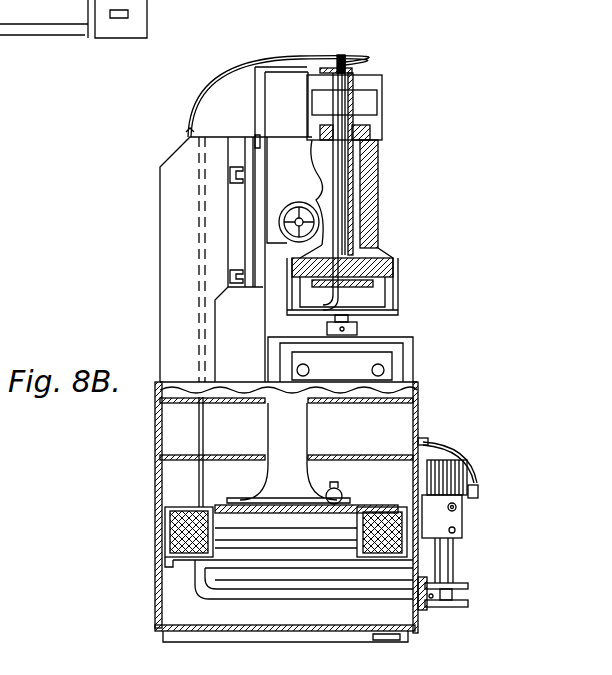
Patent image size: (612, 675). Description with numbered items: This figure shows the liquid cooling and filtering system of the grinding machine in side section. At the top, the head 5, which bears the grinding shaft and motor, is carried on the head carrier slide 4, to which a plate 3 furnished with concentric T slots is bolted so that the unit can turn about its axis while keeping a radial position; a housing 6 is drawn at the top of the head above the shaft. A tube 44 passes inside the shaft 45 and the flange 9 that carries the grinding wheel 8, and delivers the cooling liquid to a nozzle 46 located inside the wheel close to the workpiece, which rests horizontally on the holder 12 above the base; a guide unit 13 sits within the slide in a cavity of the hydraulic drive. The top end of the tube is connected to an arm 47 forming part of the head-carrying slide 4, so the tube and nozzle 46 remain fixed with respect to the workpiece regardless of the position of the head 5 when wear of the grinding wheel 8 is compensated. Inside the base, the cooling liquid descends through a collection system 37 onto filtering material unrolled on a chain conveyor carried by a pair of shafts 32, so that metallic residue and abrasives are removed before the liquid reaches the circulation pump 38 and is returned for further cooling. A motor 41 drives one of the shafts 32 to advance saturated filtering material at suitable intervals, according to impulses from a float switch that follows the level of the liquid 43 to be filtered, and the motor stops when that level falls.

The plate 3 is at (235, 150).
The head carrier slide 4 is at (255, 188).
The head 5 is at (372, 196).
The drive housing 6 is at (366, 103).
The grinding wheel 8 is at (387, 298).
The flange 9 is at (393, 277).
The holder 12 is at (317, 318).
The guide unit 13 is at (357, 332).
The shafts 32 is at (172, 530).
The collection system 37 is at (277, 430).
The circulation pump 38 is at (445, 577).
The motor 41 is at (460, 468).
The liquid to be filtered 43 is at (238, 522).
The tube 44 is at (346, 62).
The shaft 45 is at (366, 182).
The nozzle 46 is at (330, 290).
The arm 47 is at (297, 70).